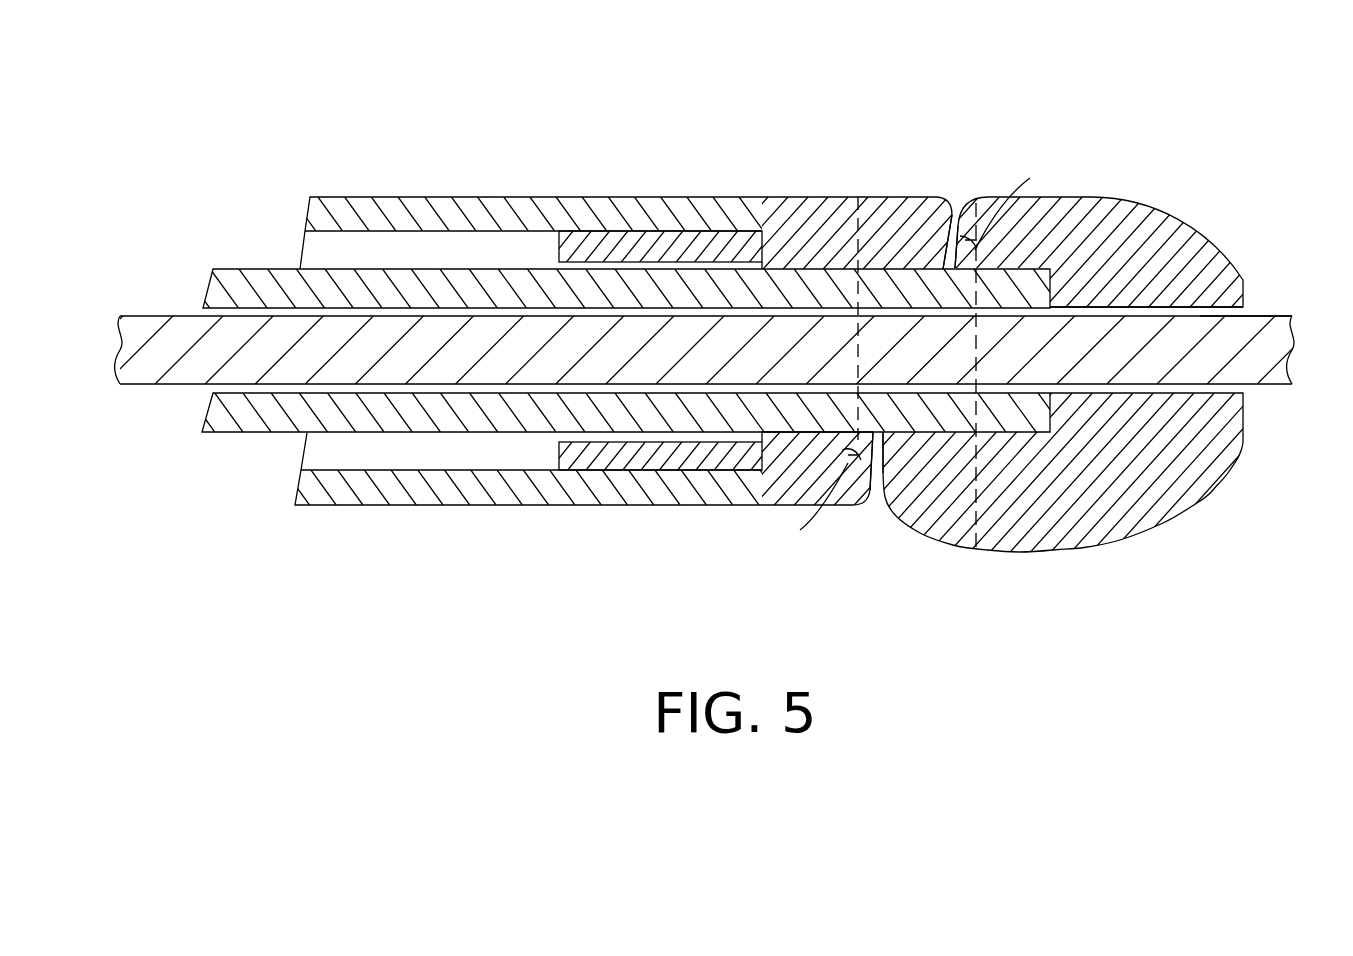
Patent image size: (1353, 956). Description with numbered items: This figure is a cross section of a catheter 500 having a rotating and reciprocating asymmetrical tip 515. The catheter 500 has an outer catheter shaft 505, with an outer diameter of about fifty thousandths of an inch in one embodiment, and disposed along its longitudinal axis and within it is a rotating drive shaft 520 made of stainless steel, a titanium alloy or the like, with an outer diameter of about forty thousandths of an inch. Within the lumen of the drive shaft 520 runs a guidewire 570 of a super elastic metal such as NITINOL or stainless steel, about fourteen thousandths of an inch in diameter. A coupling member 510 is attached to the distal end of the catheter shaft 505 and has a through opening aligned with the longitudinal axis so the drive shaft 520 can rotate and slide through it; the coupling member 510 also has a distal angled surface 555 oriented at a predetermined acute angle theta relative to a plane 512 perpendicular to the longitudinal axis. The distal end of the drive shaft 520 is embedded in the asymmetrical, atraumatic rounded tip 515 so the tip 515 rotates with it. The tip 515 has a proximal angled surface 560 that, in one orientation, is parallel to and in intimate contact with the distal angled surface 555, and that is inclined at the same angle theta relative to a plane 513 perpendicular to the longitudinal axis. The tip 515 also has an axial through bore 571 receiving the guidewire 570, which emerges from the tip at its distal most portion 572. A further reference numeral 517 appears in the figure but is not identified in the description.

The catheter 500 is at (372, 97).
The catheter shaft 505 is at (466, 217).
The coupling member 510 is at (778, 214).
The plane 512 is at (857, 228).
The plane 513 is at (980, 488).
The asymmetrical tip 515 is at (1158, 223).
The reference plane 517 is at (1030, 540).
The rotating drive shaft 520 is at (257, 282).
The distal angled surface 555 is at (947, 238).
The proximal angled surface 560 is at (885, 473).
The guidewire 570 is at (143, 367).
The axial through bore 571 is at (1097, 303).
The distal most portion 572 is at (1233, 312).